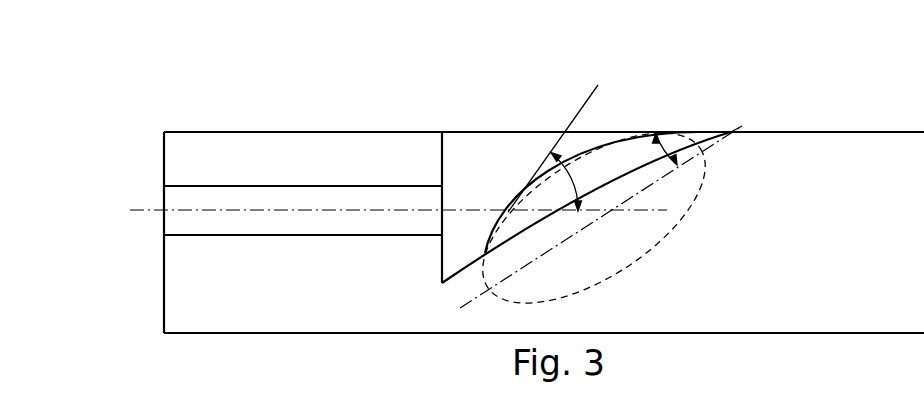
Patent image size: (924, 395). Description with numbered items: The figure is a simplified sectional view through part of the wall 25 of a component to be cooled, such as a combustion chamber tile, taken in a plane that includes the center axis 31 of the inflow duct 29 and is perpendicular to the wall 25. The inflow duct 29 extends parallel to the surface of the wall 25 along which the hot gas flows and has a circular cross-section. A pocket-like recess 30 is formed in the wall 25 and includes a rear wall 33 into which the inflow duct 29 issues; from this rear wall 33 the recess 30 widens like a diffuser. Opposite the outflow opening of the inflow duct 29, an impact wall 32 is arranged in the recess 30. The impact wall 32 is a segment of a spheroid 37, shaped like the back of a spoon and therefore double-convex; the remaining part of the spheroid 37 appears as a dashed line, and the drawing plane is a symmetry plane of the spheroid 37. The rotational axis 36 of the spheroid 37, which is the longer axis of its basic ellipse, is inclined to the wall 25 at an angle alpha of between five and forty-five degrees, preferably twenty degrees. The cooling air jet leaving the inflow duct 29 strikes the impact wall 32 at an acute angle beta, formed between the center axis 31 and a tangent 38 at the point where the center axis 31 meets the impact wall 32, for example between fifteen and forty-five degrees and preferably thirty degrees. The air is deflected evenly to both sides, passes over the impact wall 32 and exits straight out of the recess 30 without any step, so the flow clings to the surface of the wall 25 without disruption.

The wall 25 is at (853, 131).
The inflow duct 29 is at (216, 204).
The center axis 31 is at (267, 210).
The rear wall 33 is at (443, 157).
The recess 30 is at (498, 153).
The impact wall 32 is at (598, 135).
The rotational axis 36 is at (737, 122).
The spheroid 37 is at (682, 222).
The tangent 38 is at (572, 120).